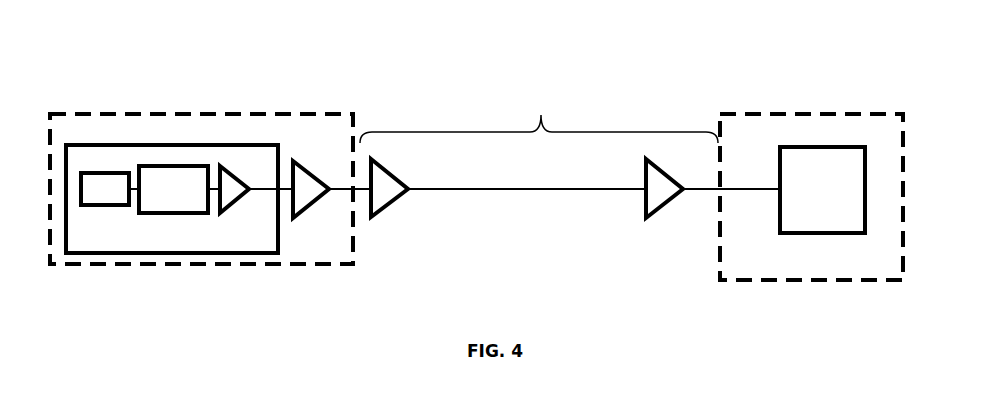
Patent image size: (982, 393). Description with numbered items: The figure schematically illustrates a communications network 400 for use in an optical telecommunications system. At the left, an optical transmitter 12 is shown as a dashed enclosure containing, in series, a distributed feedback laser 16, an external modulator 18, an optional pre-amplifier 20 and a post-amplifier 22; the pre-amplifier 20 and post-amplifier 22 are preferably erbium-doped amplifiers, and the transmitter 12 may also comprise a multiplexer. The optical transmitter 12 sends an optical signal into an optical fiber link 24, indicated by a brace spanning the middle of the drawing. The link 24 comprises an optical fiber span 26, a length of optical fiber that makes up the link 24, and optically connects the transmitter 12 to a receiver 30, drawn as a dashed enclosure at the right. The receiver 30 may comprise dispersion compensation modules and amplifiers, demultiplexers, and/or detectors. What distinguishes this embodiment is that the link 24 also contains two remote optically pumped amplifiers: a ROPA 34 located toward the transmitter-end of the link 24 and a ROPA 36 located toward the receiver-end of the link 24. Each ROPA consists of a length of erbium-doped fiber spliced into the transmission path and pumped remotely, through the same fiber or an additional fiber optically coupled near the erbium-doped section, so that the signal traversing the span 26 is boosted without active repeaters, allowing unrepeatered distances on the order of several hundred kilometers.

The network 400 is at (466, 88).
The optical transmitter 12 is at (112, 264).
The distributed feedback laser 16 is at (99, 173).
The external modulator 18 is at (175, 166).
The pre-amplifier 20 is at (235, 174).
The post-amplifier 22 is at (312, 168).
The optical fiber link 24 is at (539, 202).
The optical fiber span 26 is at (507, 189).
The receiver 30 is at (847, 115).
The remote optically pumped amplifier 34 is at (385, 212).
The remote optically pumped amplifier 36 is at (646, 218).